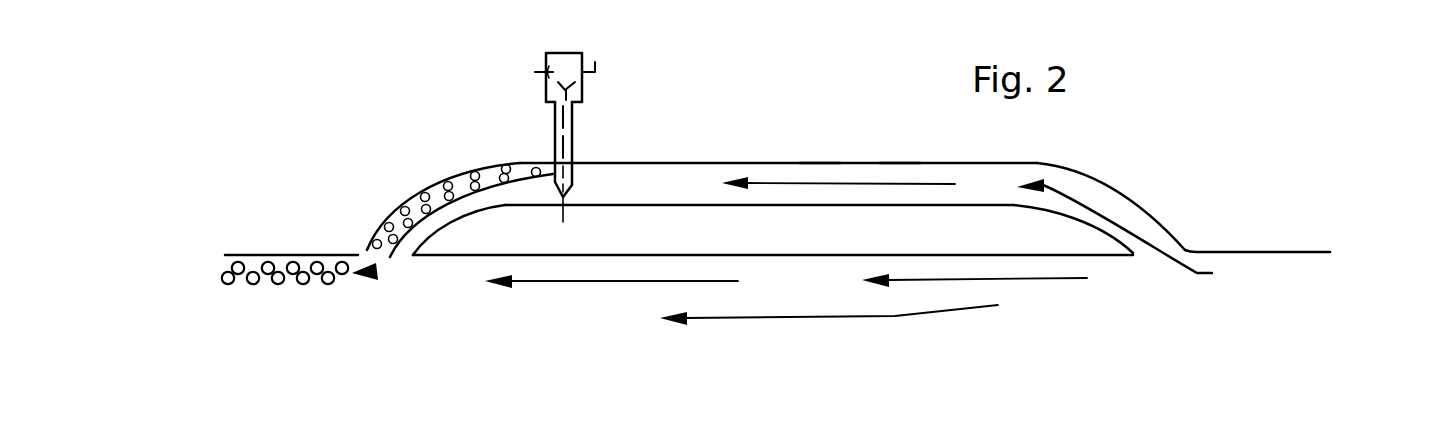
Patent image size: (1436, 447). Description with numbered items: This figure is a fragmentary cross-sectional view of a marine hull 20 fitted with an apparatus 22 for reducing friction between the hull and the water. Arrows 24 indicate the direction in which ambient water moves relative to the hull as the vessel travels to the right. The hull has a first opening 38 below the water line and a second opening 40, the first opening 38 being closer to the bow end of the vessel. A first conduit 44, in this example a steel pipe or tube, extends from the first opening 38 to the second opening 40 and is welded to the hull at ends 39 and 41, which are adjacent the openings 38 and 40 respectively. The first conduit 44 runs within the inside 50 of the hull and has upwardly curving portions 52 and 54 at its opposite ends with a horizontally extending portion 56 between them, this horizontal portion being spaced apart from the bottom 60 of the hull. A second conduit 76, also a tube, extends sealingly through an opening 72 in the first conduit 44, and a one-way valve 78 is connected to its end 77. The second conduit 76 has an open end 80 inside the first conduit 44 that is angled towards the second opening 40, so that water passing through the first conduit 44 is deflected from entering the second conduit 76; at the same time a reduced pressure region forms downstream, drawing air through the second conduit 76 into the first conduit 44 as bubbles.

The marine hull 20 is at (1057, 248).
The apparatus 22 is at (817, 162).
The arrows 24 is at (980, 279).
The first opening 38 is at (1170, 247).
The end of first conduit 39 is at (1163, 220).
The second opening 40 is at (372, 250).
The end of first conduit 41 is at (445, 229).
The first conduit 44 is at (650, 162).
The inside of the hull 50 is at (836, 157).
The upwardly curving portion 52 is at (1135, 198).
The upwardly curving portion 54 is at (425, 192).
The horizontally extending portion 56 is at (897, 162).
The bottom of the hull 60 is at (895, 255).
The opening in the first conduit 72 is at (553, 158).
The second conduit 76 is at (573, 113).
The end of second conduit 77 is at (546, 101).
The one-way valve 78 is at (548, 67).
The open end of second conduit 80 is at (566, 225).